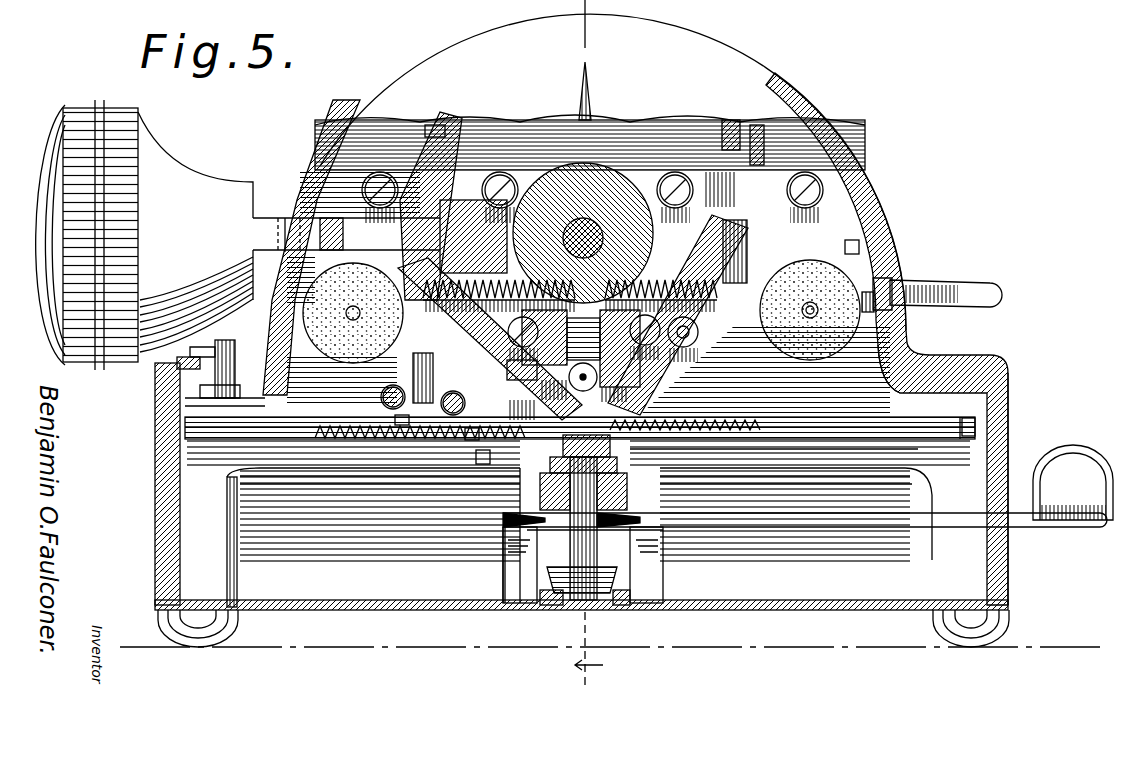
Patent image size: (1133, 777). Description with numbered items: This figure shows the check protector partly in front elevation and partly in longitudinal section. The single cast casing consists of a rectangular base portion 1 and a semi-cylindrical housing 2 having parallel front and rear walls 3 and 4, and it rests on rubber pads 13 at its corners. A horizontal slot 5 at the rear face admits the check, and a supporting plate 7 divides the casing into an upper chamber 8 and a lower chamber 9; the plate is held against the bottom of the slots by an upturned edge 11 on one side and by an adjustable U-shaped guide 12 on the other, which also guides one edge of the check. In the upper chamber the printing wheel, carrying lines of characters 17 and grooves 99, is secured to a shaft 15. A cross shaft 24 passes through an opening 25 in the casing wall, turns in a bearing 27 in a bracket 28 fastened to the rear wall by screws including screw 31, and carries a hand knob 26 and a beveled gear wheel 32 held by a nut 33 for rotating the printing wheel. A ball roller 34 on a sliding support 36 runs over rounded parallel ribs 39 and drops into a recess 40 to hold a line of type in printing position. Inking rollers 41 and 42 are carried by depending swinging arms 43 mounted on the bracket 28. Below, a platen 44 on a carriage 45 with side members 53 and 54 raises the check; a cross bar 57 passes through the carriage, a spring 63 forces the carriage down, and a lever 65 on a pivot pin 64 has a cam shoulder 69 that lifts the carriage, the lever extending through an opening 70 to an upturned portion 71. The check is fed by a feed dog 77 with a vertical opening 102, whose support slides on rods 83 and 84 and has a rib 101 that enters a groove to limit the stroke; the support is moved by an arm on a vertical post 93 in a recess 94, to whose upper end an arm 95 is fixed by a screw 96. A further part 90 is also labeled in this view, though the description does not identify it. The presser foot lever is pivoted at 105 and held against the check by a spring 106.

The base portion 1 is at (992, 425).
The semi-cylindrical housing 2 is at (838, 128).
The front wall 3 is at (712, 65).
The rear wall 4 is at (584, 659).
The horizontal slot 5 is at (832, 410).
The supporting plate 7 is at (922, 430).
The upper chamber 8 is at (850, 243).
The lower chamber 9 is at (918, 449).
The upturned edge 11 is at (975, 422).
The U-shaped guide 12 is at (323, 425).
The rubber pads 13 is at (236, 626).
The shaft 15 is at (583, 233).
The lines of characters 17 is at (418, 160).
The cross shaft 24 is at (272, 230).
The opening 25 is at (291, 220).
The hand knob 26 is at (115, 243).
The bearing 27 is at (460, 195).
The bracket 28 is at (691, 240).
The screw 31 is at (583, 247).
The beveled gear wheel 32 is at (528, 190).
The nut 33 is at (598, 145).
The ball roller 34 is at (527, 520).
The support 36 is at (499, 296).
The rounded parallel ribs 39 is at (733, 128).
The recess 40 is at (760, 130).
The inking roller 41 is at (300, 312).
The inking roller 42 is at (882, 266).
The depending swinging arms 43 is at (895, 148).
The platen 44 is at (553, 384).
The carriage 45 is at (530, 575).
The side member 53 is at (525, 606).
The side member 54 is at (636, 606).
The cross bar 57 is at (597, 558).
The spring 63 is at (570, 606).
The pivot pin 64 is at (600, 606).
The lever 65 is at (862, 527).
The cam shoulder 69 is at (640, 520).
The opening 70 is at (1012, 530).
The upturned portion 71 is at (1073, 482).
The feed dog 77 is at (472, 435).
The rod 83 is at (448, 412).
The rod 84 is at (400, 425).
The hub 90 is at (455, 200).
The vertical post 93 is at (210, 400).
The recess 94 is at (220, 387).
The arm 95 is at (215, 355).
The screw 96 is at (205, 343).
The grooves 99 is at (438, 130).
The rib 101 is at (390, 407).
The vertical opening 102 is at (483, 457).
The pivot 105 is at (995, 288).
The spring 106 is at (855, 245).